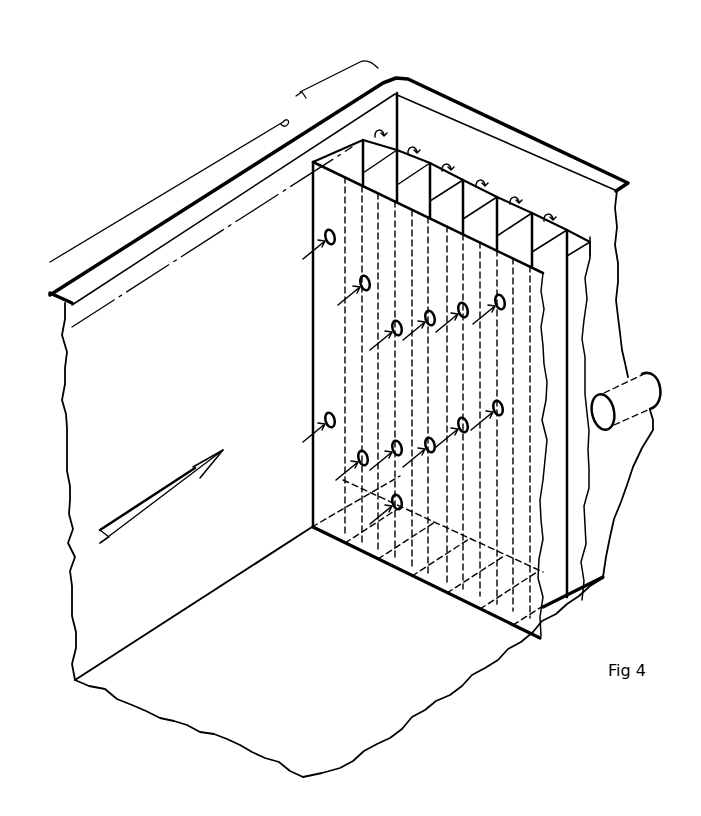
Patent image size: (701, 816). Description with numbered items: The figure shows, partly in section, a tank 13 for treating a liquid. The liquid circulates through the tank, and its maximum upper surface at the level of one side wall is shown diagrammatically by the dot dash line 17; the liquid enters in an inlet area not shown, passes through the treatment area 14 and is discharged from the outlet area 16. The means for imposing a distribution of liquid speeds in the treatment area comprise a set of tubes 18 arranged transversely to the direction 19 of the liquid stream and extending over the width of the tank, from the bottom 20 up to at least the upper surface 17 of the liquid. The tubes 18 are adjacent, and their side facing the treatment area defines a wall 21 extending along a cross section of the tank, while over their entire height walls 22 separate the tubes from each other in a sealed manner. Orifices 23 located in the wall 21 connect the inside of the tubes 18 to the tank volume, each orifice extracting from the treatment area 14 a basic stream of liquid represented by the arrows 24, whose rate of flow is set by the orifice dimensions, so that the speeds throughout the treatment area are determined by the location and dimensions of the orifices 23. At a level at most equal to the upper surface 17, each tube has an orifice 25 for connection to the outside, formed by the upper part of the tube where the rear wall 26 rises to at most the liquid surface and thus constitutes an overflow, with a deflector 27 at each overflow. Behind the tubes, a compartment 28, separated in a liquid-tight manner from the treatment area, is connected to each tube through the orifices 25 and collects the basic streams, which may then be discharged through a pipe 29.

The tank 13 is at (76, 624).
The treatment area 14 is at (137, 209).
The outlet area 16 is at (300, 92).
The dot dash line 17 is at (167, 271).
The tubes 18 is at (380, 574).
The direction of the stream of liquid 19 is at (132, 495).
The bottom 20 is at (158, 718).
The wall 21 is at (320, 354).
The walls 22 is at (386, 134).
The orifices 23 is at (330, 246).
The arrows 24 is at (302, 258).
The orifice for connection to the outside 25 is at (339, 161).
The rear wall 26 is at (399, 145).
The deflector 27 is at (360, 137).
The compartment 28 is at (606, 322).
The pipe 29 is at (652, 412).